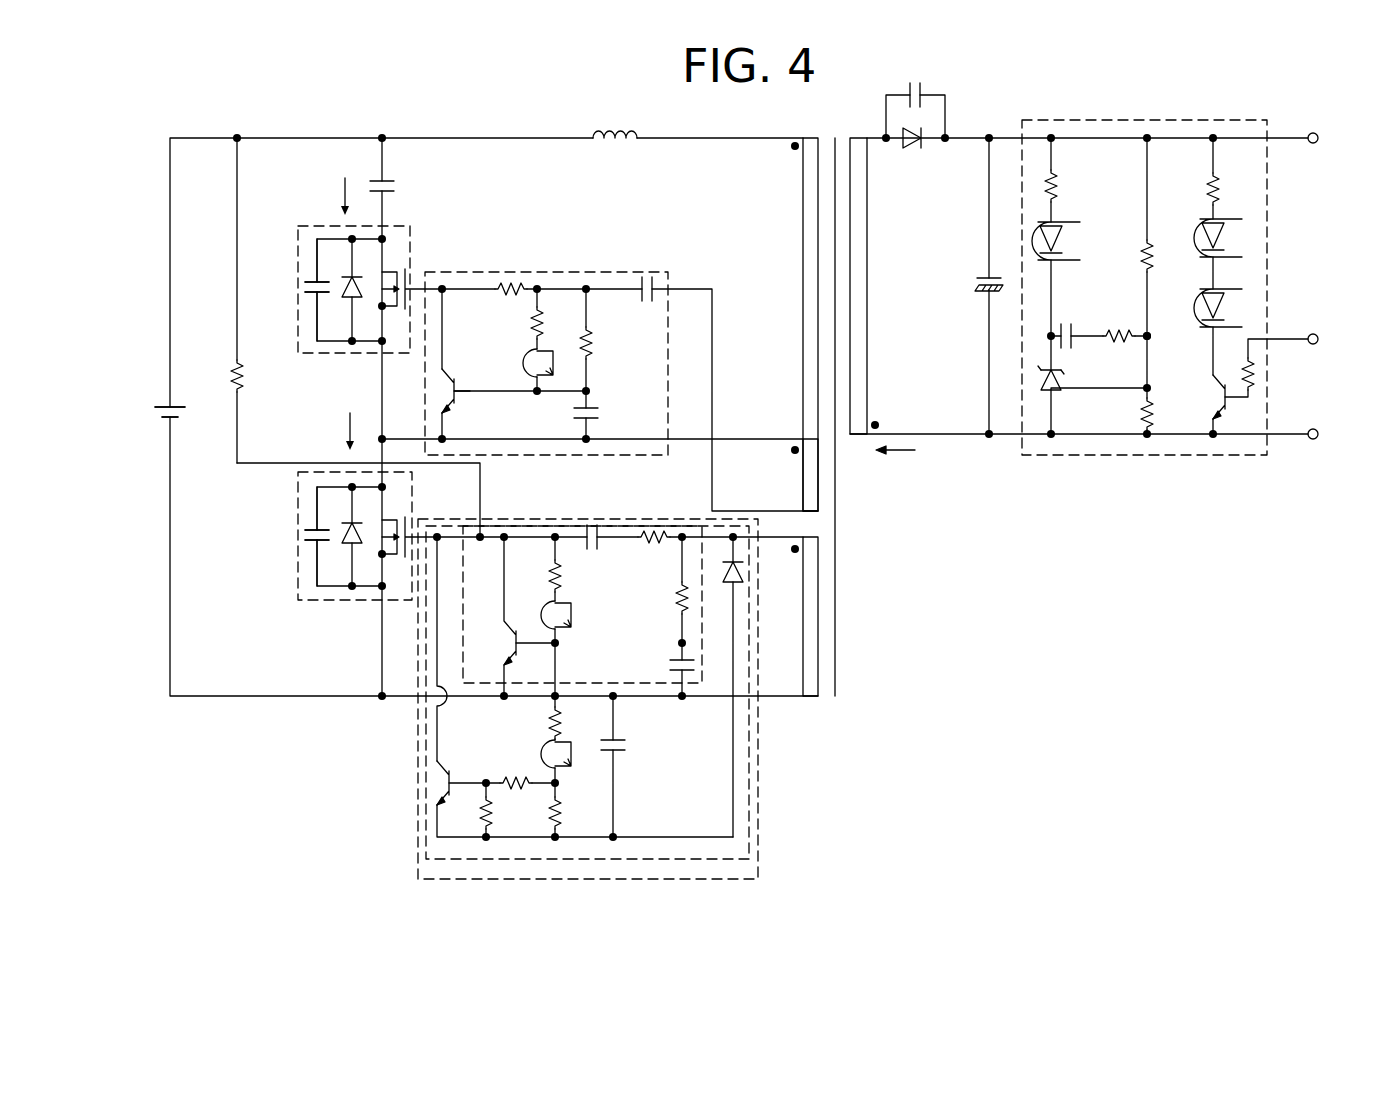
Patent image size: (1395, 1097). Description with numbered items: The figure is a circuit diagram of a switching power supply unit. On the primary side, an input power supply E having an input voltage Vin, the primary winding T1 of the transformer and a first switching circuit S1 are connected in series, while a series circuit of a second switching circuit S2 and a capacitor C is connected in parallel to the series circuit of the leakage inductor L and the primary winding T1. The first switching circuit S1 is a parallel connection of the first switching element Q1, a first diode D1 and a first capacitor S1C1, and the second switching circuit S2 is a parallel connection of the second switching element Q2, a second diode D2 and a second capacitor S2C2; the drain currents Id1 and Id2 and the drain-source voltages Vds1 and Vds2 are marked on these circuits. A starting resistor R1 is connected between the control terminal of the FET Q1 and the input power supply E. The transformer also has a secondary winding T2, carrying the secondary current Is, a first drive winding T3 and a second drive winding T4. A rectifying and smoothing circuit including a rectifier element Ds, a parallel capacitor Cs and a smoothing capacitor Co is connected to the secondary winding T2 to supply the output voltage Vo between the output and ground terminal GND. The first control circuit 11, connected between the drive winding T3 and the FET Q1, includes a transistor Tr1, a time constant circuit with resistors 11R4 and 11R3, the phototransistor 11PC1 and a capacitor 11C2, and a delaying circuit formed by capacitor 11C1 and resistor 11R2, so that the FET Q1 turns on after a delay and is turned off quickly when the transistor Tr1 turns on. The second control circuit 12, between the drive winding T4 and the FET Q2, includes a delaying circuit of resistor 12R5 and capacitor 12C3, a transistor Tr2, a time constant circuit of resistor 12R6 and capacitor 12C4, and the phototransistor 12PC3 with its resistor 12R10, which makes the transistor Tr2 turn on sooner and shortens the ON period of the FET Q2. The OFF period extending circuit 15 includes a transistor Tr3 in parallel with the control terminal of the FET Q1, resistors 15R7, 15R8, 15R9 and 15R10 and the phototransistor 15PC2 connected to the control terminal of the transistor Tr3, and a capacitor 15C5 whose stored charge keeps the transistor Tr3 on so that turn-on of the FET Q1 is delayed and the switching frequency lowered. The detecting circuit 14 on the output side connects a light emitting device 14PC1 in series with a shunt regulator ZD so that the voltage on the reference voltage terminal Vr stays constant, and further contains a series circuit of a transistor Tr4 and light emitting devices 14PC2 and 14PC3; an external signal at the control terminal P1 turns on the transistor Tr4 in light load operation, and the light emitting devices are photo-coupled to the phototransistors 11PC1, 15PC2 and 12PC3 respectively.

The input voltage Vin is at (154, 398).
The input power supply E is at (165, 426).
The starting resistor R1 is at (221, 300).
The leakage inductor L is at (615, 162).
The capacitor C is at (392, 182).
The drain current of FET Q2 Id2 is at (329, 194).
The drain current of FET Q1 Id1 is at (334, 433).
The second switching circuit S2 is at (332, 290).
The drain-source voltage of FET Q2 Vds2 is at (312, 290).
The second capacitor S2C2 is at (334, 342).
The second diode D2 is at (372, 322).
The second switching element Q2 is at (403, 272).
The first switching circuit S1 is at (325, 570).
The drain-source voltage of FET Q1 Vds1 is at (306, 536).
The first capacitor S1C1 is at (333, 572).
The first diode D1 is at (367, 571).
The first switching element Q1 is at (405, 520).
The second control circuit 12 is at (621, 361).
The resistor 12R5 is at (487, 304).
The capacitor 12C3 is at (648, 275).
The resistor 12R10 is at (502, 319).
The phototransistor 12PC3 is at (500, 370).
The resistor 12R6 is at (618, 340).
The capacitor 12C4 is at (558, 415).
The transistor Tr2 is at (465, 400).
The primary winding T1 is at (796, 417).
The second drive winding T4 is at (787, 475).
The first drive winding T3 is at (806, 632).
The secondary winding T2 is at (879, 286).
The first control circuit 11 is at (618, 651).
The capacitor 11C1 is at (608, 551).
The resistor 11R2 is at (648, 528).
The resistor 11R3 is at (546, 574).
The phototransistor 11PC1 is at (575, 612).
The resistor 11R4 is at (654, 590).
The capacitor 11C2 is at (671, 668).
The transistor Tr1 is at (528, 616).
The OFF period extending circuit 15 is at (588, 722).
The transistor Tr3 is at (457, 775).
The resistor 15R9 is at (521, 795).
The resistor 15R10 is at (473, 813).
The resistor 15R8 is at (565, 813).
The resistor 15R7 is at (567, 720).
The phototransistor 15PC2 is at (522, 744).
The capacitor 15C5 is at (646, 747).
The capacitor Cs is at (919, 102).
The rectifier element Ds is at (929, 153).
The smoothing capacitor Co is at (978, 278).
The secondary current Is is at (897, 468).
The detecting circuit 14 is at (1191, 266).
The light emitting device 14PC1 is at (1084, 215).
The shunt regulator ZD is at (1064, 396).
The reference voltage terminal Vr is at (1160, 339).
The light emitting device 14PC2 is at (1199, 214).
The light emitting device 14PC3 is at (1226, 286).
The transistor Tr4 is at (1199, 399).
The output voltage Vo is at (1329, 138).
The control terminal P1 is at (1329, 339).
The ground terminal GND is at (1340, 434).